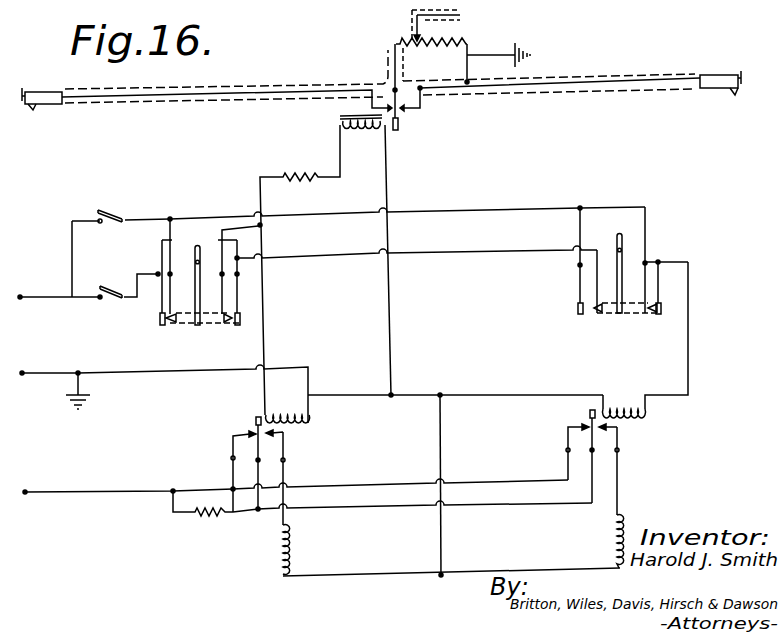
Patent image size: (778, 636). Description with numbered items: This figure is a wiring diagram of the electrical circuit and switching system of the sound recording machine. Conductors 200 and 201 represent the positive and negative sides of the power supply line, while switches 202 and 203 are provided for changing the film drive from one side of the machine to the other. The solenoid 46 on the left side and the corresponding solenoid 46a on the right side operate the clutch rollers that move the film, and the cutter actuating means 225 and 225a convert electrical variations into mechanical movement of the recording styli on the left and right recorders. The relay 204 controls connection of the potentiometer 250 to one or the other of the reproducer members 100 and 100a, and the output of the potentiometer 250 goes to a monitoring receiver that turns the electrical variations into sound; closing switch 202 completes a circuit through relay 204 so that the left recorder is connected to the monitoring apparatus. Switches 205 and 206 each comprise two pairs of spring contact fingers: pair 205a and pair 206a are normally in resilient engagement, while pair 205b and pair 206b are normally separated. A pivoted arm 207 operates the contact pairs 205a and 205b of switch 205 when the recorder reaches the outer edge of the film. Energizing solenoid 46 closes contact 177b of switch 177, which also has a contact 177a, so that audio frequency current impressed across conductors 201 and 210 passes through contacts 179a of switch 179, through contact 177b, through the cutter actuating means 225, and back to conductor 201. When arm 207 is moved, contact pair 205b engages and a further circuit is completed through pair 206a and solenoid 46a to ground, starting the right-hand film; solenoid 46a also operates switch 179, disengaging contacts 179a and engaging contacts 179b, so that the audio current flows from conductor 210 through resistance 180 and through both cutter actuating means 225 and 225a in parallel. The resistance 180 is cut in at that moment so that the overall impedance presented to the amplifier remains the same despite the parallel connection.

The reproducer member 100 is at (50, 80).
The reproducer member 100a is at (725, 58).
The potentiometer 250 is at (467, 33).
The relay 204 is at (367, 132).
The pivoted arm 207 is at (199, 268).
The switch 203 is at (108, 224).
The conductor 200 is at (50, 298).
The switch 202 is at (108, 304).
The conductor 201 is at (48, 360).
The switch 205 is at (186, 276).
The contact finger pair 205a is at (235, 324).
The contact finger pair 205b is at (166, 326).
The switch 206 is at (598, 296).
The contact finger pair 206a is at (655, 321).
The contact finger pair 206b is at (590, 319).
The solenoid 46 is at (298, 429).
The solenoid 46a is at (639, 421).
The switch 177 is at (245, 421).
The contact 177a is at (253, 437).
The contact 177b is at (272, 438).
The switch 179 is at (582, 415).
The contacts 179a is at (585, 429).
The contacts 179b is at (604, 433).
The conductor 210 is at (67, 473).
The resistance 180 is at (218, 517).
The cutter actuating means 225 is at (290, 558).
The cutter actuating means 225a is at (612, 532).